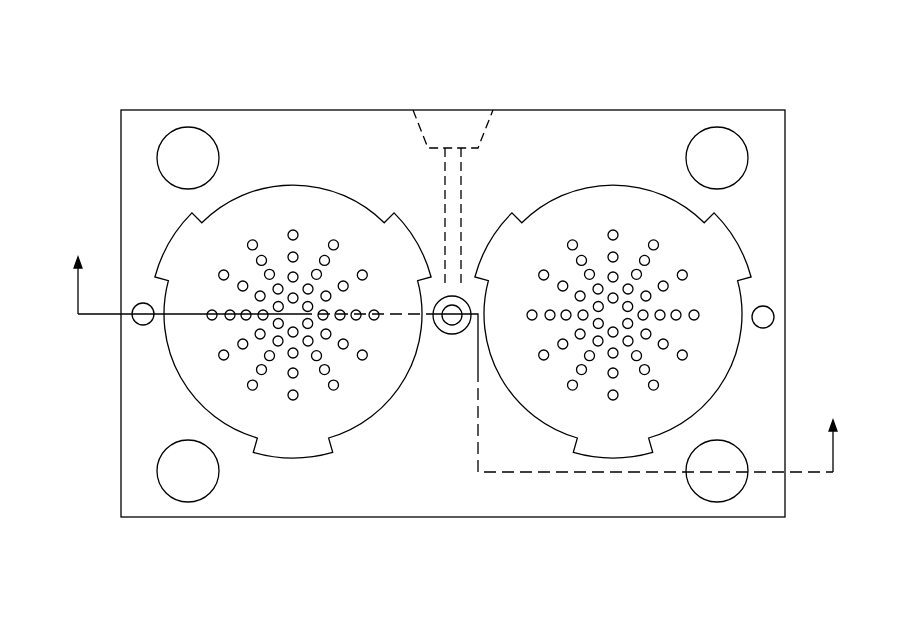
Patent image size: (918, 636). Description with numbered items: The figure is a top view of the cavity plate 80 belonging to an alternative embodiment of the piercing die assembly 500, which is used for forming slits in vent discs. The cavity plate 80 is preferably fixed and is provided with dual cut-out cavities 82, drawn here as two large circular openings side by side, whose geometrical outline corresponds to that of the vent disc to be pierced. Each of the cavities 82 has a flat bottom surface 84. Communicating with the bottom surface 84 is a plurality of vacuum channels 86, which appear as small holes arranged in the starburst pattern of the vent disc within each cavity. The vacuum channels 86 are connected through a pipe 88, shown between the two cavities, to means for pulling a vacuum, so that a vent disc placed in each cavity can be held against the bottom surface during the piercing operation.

The die assembly 500 is at (230, 70).
The cavity plate 80 is at (121, 150).
The cavities 82 is at (190, 363).
The bottom surface 84 is at (353, 171).
The vacuum channels 86 is at (298, 397).
The pipe 88 is at (447, 125).